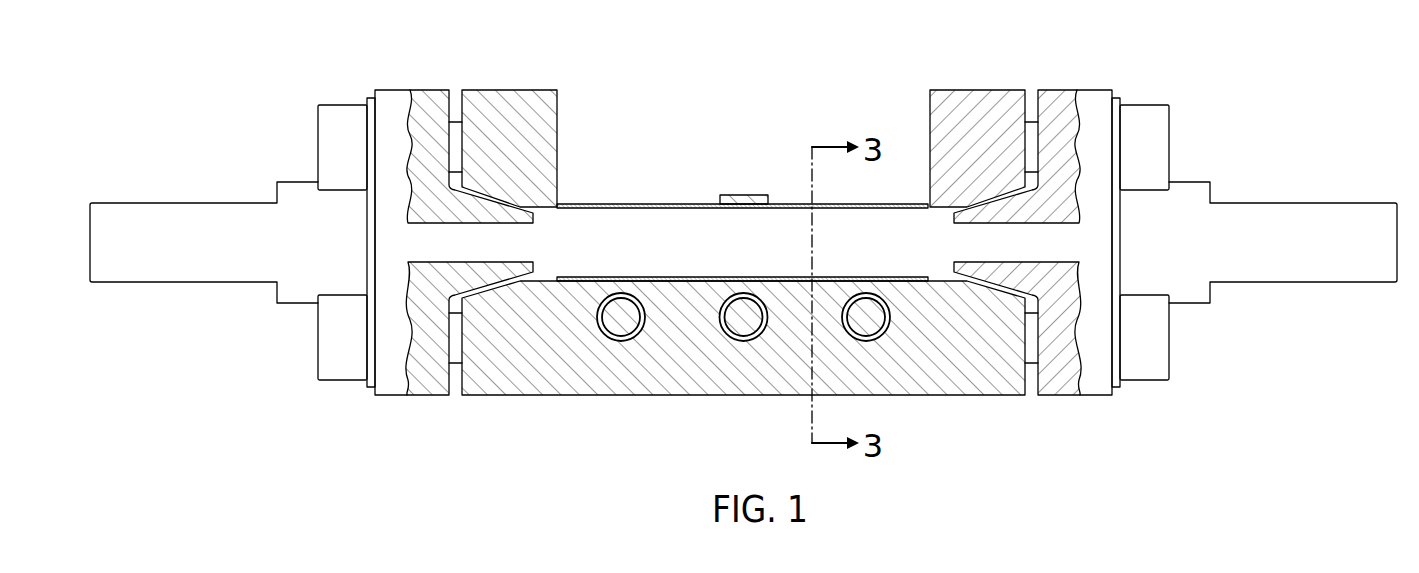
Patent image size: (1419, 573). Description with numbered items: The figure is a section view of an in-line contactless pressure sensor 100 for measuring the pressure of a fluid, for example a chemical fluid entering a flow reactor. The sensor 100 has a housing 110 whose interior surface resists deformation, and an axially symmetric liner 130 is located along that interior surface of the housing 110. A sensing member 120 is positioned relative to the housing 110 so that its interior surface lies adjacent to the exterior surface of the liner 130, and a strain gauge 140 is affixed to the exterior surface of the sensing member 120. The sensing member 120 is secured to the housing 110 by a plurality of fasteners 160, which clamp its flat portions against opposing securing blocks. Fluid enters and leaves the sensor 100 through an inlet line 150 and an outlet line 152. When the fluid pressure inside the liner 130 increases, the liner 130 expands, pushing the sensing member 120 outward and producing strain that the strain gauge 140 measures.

The in-line contactless pressure sensor 100 is at (856, 98).
The housing 110 is at (978, 90).
The sensing member 120 is at (596, 203).
The axially symmetric liner 130 is at (658, 209).
The strain gauge 140 is at (749, 195).
The inlet line 150 is at (1087, 90).
The outlet line 152 is at (393, 395).
The fasteners 160 is at (620, 302).